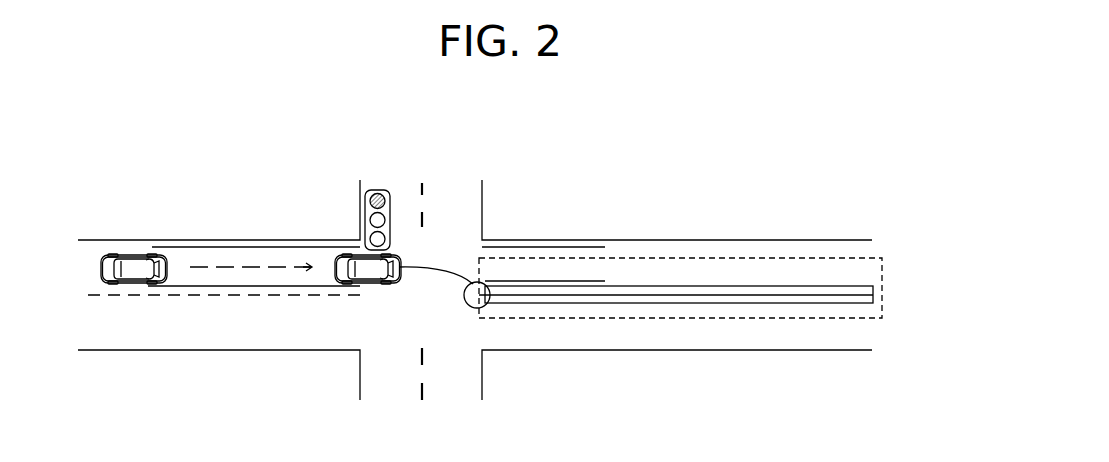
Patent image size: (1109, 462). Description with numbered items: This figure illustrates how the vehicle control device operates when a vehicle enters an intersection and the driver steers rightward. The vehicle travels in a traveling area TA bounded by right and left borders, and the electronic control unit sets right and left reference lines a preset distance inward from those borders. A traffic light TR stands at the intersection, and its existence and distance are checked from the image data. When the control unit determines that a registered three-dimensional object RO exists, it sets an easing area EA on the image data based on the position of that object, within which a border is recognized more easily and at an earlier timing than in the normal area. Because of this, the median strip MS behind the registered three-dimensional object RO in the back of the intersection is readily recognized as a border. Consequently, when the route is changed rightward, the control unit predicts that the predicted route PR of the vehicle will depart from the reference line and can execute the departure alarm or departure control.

The traffic light TR is at (375, 190).
The traveling area TA is at (318, 272).
The predicted route PR is at (427, 268).
The registered three-dimensional object RO is at (478, 280).
The easing area EA is at (812, 258).
The median strip MS is at (855, 303).